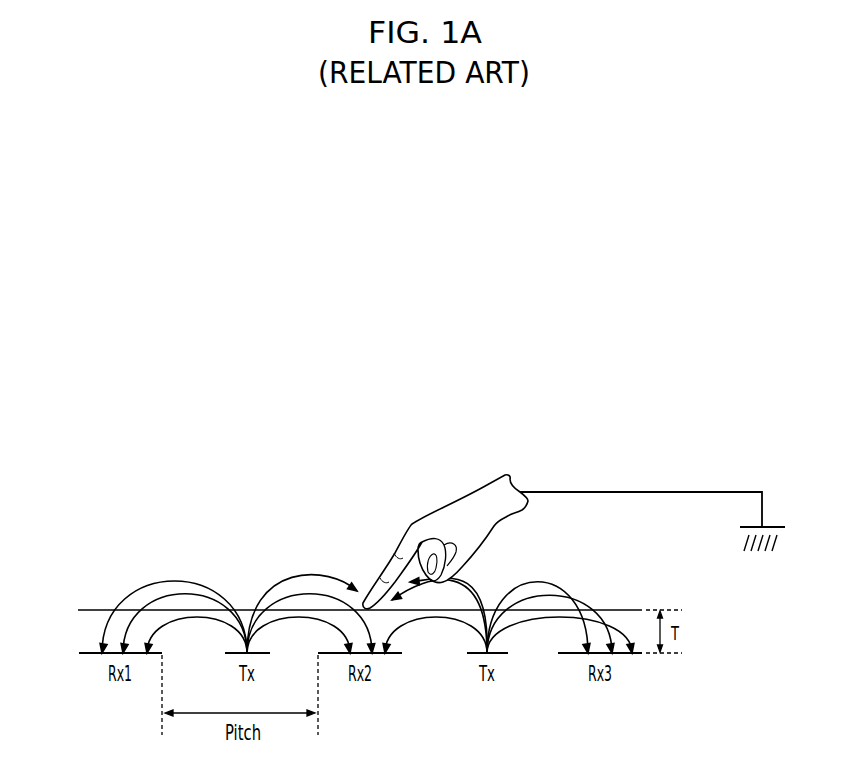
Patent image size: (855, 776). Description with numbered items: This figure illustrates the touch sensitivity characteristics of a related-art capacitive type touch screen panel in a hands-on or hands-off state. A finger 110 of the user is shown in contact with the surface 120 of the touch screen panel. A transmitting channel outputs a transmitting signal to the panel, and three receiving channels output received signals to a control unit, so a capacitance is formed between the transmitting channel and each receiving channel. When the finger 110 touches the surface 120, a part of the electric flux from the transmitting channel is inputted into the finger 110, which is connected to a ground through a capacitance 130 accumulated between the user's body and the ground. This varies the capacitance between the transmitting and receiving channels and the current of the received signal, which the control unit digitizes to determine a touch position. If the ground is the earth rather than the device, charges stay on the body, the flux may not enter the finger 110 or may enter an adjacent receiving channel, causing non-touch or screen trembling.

The finger 110 is at (409, 527).
The surface of the touch screen panel 120 is at (88, 610).
The capacitance accumulated between the user's body and a ground 130 is at (770, 524).